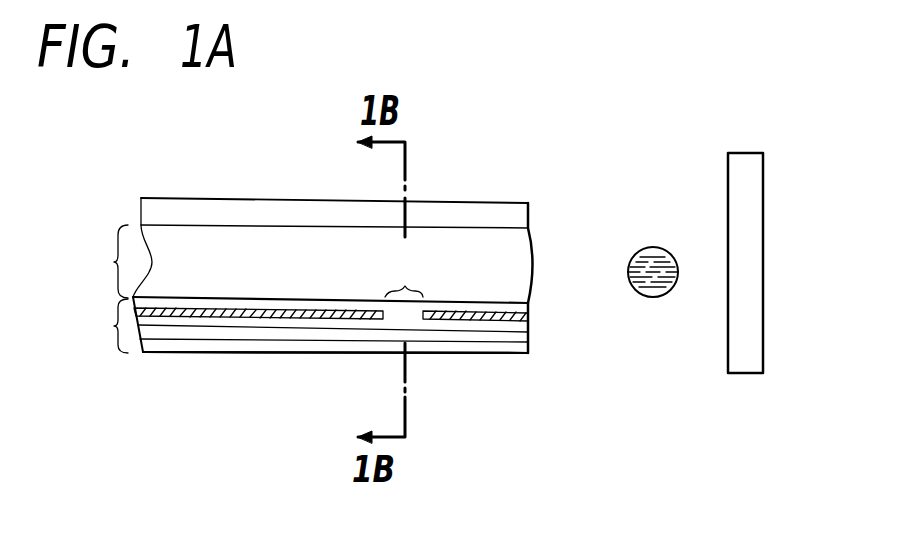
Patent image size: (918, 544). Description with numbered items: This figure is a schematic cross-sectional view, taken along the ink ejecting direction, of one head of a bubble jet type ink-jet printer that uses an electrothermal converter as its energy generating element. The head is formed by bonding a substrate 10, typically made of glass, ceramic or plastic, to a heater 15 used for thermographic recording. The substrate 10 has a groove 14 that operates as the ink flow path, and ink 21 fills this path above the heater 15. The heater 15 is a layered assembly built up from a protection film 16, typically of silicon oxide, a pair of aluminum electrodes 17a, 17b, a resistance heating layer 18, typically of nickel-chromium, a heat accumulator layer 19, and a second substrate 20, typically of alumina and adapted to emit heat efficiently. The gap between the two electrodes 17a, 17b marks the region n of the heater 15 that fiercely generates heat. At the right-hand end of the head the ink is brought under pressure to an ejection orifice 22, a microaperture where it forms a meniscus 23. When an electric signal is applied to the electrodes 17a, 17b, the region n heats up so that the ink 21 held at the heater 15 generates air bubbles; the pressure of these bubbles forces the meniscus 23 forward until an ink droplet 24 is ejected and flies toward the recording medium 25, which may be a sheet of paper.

The substrate 10 is at (245, 207).
The ink 21 is at (178, 238).
The groove 14 is at (108, 261).
The heater 15 is at (108, 326).
The protection film 16 is at (173, 303).
The aluminum electrode 17a is at (213, 315).
The aluminum electrode 17b is at (485, 320).
The resistance heating layer 18 is at (258, 322).
The heat accumulator layer 19 is at (313, 333).
The substrate 20 is at (368, 346).
The orifice 22 is at (547, 293).
The meniscus 23 is at (538, 256).
The ink droplet 24 is at (650, 254).
The recording medium 25 is at (728, 192).
The heater region n is at (405, 285).